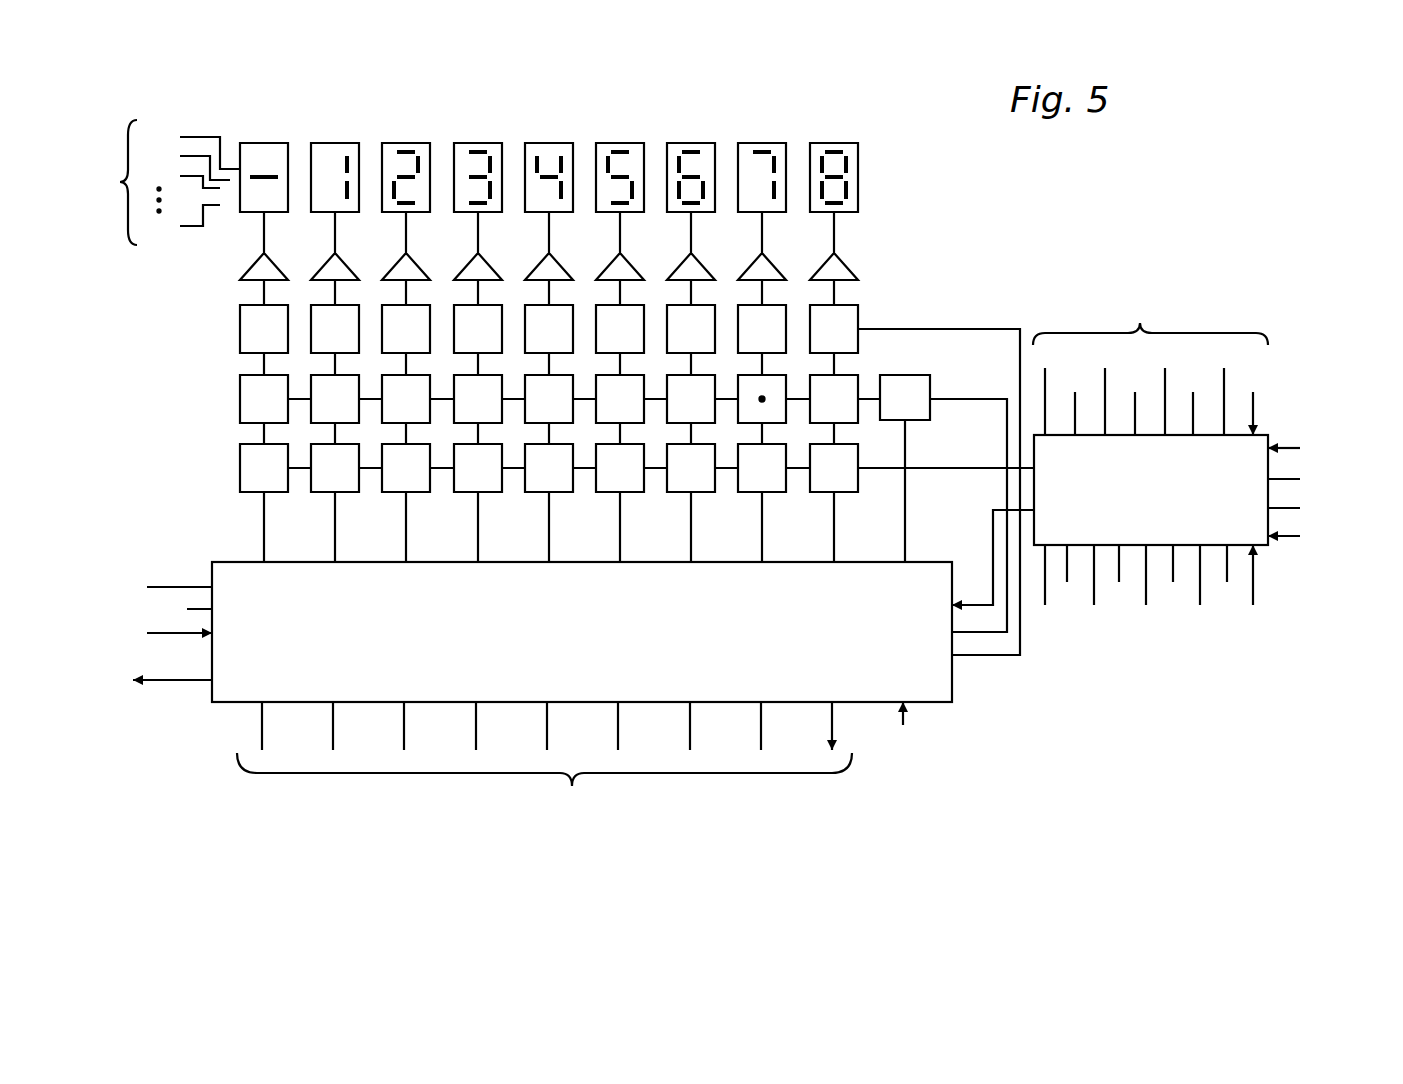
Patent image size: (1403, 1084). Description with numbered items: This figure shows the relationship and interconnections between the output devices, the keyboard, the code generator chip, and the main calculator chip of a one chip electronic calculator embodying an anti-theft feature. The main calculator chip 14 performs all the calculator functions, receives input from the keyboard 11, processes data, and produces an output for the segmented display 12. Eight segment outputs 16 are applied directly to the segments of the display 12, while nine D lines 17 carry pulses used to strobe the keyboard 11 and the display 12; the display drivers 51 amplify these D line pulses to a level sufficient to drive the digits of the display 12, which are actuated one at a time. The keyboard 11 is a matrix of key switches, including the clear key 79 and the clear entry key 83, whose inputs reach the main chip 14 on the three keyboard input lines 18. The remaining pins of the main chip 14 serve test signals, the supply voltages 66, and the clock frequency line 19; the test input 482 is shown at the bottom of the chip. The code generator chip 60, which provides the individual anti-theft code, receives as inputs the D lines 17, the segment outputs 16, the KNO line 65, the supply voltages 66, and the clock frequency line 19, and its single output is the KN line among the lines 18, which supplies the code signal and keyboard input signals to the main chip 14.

The keyboard 11 is at (553, 387).
The segmented output display 12 is at (547, 140).
The main calculator chip 14 is at (776, 643).
The segment outputs 16 is at (237, 153).
The D lines 17 is at (621, 550).
The keyboard input lines 18 is at (1000, 603).
The clock frequency line 19 is at (190, 682).
The display drivers 51 is at (481, 263).
The code generator chip 60 is at (1244, 536).
The KNO line 65 is at (1000, 467).
The supply voltages 66 is at (197, 603).
The clear key 79 is at (248, 381).
The clear entry key 83 is at (709, 387).
The test input 482 is at (909, 719).